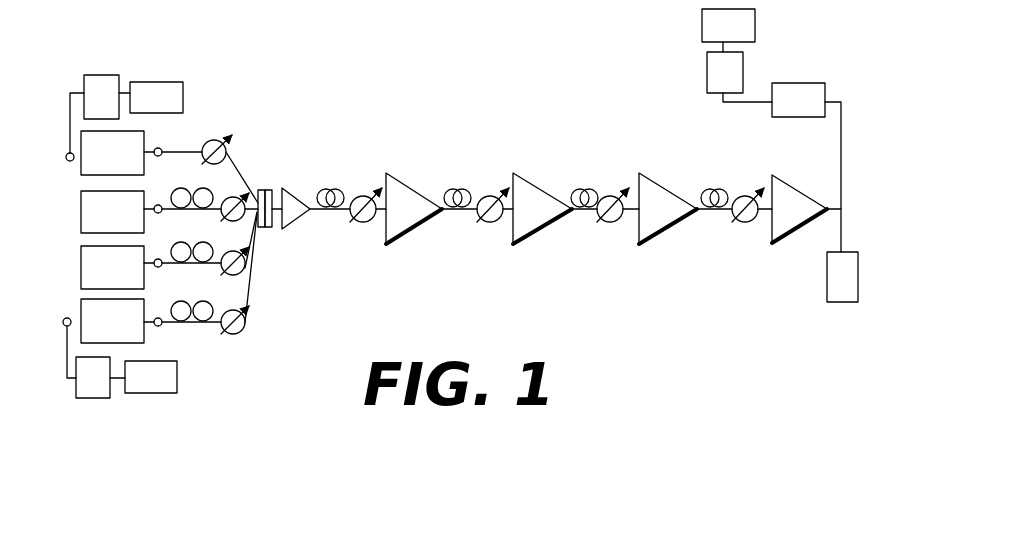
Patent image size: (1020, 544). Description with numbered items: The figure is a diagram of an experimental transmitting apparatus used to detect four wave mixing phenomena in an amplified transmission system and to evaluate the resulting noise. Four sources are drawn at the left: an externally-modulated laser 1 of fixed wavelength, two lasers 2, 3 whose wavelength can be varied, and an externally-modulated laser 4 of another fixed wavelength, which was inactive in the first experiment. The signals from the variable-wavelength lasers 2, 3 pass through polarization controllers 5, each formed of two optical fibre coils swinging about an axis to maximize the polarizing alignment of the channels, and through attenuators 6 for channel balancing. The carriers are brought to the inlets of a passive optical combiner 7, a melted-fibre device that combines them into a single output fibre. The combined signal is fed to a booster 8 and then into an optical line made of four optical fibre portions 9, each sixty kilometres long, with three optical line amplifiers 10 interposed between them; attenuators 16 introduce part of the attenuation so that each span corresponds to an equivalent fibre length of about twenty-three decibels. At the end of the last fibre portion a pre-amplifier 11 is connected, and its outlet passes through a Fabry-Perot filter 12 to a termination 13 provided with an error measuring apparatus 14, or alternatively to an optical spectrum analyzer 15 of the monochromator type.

The externally-modulated laser 1 is at (98, 157).
The laser 2 is at (98, 211).
The laser 3 is at (98, 262).
The externally-modulated laser 4 is at (98, 325).
The polarization controller 5 is at (180, 190).
The attenuator 6 is at (215, 139).
The passive optical combiner 7 is at (270, 228).
The booster 8 is at (296, 196).
The optical fibre portion 9 is at (333, 188).
The optical line amplifier 10 is at (410, 222).
The pre-amplifier 11 is at (806, 205).
The Fabry-Perot filter 12 is at (800, 96).
The termination 13 is at (722, 73).
The error measuring apparatus 14 is at (740, 24).
The optical spectrum analyzer 15 is at (843, 303).
The attenuator 16 is at (361, 223).